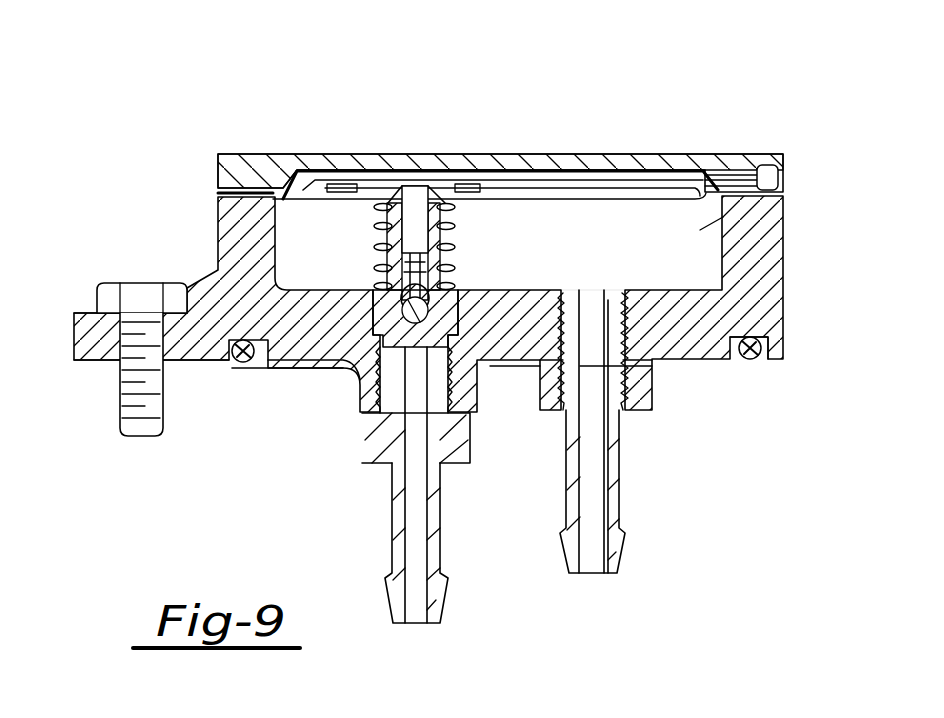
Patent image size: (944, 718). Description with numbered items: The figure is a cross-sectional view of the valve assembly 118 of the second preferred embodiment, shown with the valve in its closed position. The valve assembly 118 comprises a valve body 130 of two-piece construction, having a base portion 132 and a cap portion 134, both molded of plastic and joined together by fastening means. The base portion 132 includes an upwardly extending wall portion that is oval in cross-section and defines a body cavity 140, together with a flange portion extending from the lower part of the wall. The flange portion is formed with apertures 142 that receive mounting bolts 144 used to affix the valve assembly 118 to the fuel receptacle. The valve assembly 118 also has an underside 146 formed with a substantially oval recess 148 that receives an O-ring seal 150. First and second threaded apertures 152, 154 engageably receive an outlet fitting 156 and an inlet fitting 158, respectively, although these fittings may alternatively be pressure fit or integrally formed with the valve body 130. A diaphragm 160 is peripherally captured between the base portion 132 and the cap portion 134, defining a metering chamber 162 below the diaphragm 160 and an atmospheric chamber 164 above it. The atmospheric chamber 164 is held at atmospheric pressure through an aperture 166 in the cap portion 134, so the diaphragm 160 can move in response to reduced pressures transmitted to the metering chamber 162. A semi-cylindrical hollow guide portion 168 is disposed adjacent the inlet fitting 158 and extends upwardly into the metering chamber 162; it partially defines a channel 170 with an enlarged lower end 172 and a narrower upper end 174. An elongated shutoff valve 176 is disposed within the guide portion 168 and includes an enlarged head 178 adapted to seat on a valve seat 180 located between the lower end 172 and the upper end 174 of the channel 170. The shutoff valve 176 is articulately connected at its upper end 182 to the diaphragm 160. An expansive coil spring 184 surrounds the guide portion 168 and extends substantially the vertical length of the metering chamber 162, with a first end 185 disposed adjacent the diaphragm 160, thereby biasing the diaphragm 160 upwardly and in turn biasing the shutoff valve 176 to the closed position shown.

The valve assembly 118 is at (128, 235).
The valve body 130 is at (240, 252).
The base portion 132 is at (787, 238).
The cap portion 134 is at (240, 172).
The body cavity 140 is at (772, 192).
The apertures 142 is at (125, 345).
The mounting bolts 144 is at (157, 413).
The underside 146 is at (203, 362).
The oval recess 148 is at (740, 360).
The O-ring seal 150 is at (765, 360).
The first threaded aperture 152 is at (627, 340).
The second threaded aperture 154 is at (437, 395).
The outlet fitting 156 is at (617, 538).
The inlet fitting 158 is at (393, 570).
The diaphragm 160 is at (599, 186).
The metering chamber 162 is at (693, 275).
The atmospheric chamber 164 is at (490, 180).
The aperture 166 is at (770, 177).
The guide portion 168 is at (390, 235).
The channel 170 is at (427, 262).
The enlarged lower end 172 is at (343, 368).
The narrower upper end 174 is at (430, 272).
The shutoff valve 176 is at (418, 235).
The enlarged head 178 is at (460, 350).
The valve seat 180 is at (378, 288).
The upper end 182 is at (413, 205).
The coil spring 184 is at (375, 273).
The first end 185 is at (447, 203).